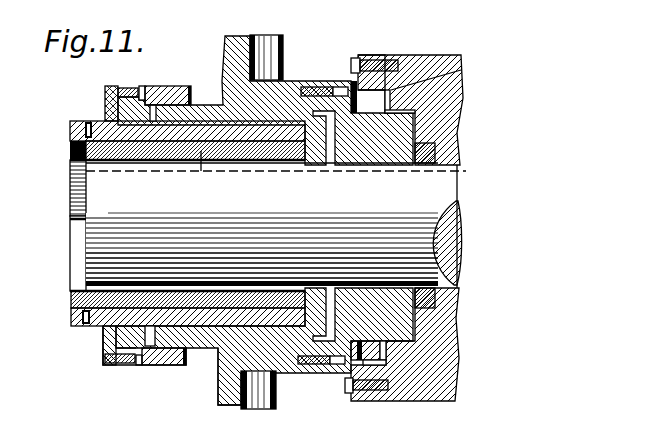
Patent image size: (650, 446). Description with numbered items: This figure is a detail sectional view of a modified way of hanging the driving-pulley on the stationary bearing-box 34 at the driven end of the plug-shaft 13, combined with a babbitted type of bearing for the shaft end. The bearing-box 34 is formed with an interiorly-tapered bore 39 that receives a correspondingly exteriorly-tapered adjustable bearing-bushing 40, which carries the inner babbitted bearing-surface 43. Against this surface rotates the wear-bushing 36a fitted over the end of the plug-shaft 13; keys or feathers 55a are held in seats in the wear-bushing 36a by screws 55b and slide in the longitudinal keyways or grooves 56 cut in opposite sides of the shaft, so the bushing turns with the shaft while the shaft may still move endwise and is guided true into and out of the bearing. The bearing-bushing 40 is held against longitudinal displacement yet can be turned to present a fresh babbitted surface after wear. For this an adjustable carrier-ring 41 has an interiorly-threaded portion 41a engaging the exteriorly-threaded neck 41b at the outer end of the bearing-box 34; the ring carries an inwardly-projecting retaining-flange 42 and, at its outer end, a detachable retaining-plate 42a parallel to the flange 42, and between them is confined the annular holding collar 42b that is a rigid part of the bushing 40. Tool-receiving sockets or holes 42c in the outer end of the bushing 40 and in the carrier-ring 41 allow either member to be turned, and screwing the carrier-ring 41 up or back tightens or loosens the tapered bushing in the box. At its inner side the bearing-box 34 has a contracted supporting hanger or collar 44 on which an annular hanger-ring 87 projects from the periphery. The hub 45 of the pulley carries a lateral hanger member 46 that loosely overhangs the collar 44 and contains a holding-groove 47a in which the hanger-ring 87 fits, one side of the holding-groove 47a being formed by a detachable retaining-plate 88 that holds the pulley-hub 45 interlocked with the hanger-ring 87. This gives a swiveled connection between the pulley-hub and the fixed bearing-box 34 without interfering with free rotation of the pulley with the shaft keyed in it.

The plug-shaft 13 is at (62, 211).
The tubular bearing-box 34 is at (232, 400).
The wear-bushing 36a is at (62, 158).
The interiorly-tapered bore 39 is at (206, 338).
The adjustable bearing-bushing 40 is at (202, 100).
The adjustable carrier-ring 41 is at (166, 78).
The interiorly-threaded portion 41a is at (157, 358).
The exteriorly-threaded neck 41b is at (134, 78).
The retaining-flange 42 is at (95, 330).
The detachable retaining-plate 42a is at (97, 340).
The annular holding collar 42b is at (97, 100).
The tool-receiving sockets 42c is at (120, 79).
The babbitted bearing-surface 43 is at (62, 133).
The supporting hanger or collar 44 is at (318, 78).
The pulley-hub 45 is at (450, 330).
The lateral hanger member 46 is at (445, 102).
The holding-groove 47a is at (453, 62).
The keys or feathers 55a is at (131, 158).
The screws 55b is at (192, 162).
The longitudinal keyways or grooves 56 is at (218, 166).
The annular hanger-ring 87 is at (405, 48).
The detachable retaining-plate 88 is at (360, 44).